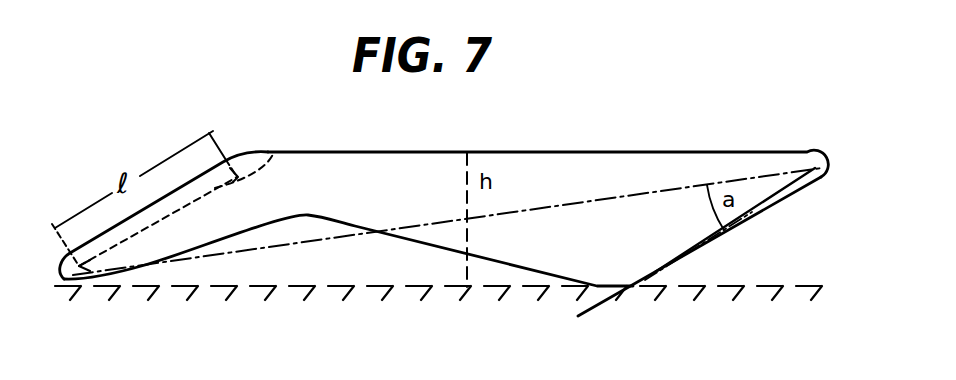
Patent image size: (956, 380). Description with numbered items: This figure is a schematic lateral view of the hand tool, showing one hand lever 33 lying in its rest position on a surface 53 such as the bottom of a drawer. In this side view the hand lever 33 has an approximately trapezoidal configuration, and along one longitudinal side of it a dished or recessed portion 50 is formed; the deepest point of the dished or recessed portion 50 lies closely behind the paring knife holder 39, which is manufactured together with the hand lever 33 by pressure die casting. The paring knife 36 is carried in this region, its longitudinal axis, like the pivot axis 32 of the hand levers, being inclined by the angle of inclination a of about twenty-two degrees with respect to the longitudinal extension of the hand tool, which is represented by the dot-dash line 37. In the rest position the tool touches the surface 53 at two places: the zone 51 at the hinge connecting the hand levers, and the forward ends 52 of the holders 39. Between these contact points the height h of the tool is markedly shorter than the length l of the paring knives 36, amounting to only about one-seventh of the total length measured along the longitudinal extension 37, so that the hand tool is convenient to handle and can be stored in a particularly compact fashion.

The pivot axis 32 is at (584, 313).
The hand lever 33 is at (380, 165).
The paring knife 36 is at (274, 152).
The dot-dash line 37 is at (546, 203).
The paring knife holder 39 is at (167, 247).
The dished or recessed portion 50 is at (303, 224).
The zone at the hinge 51 is at (640, 294).
The forward ends of the holders 52 is at (80, 297).
The surface 53 is at (436, 285).